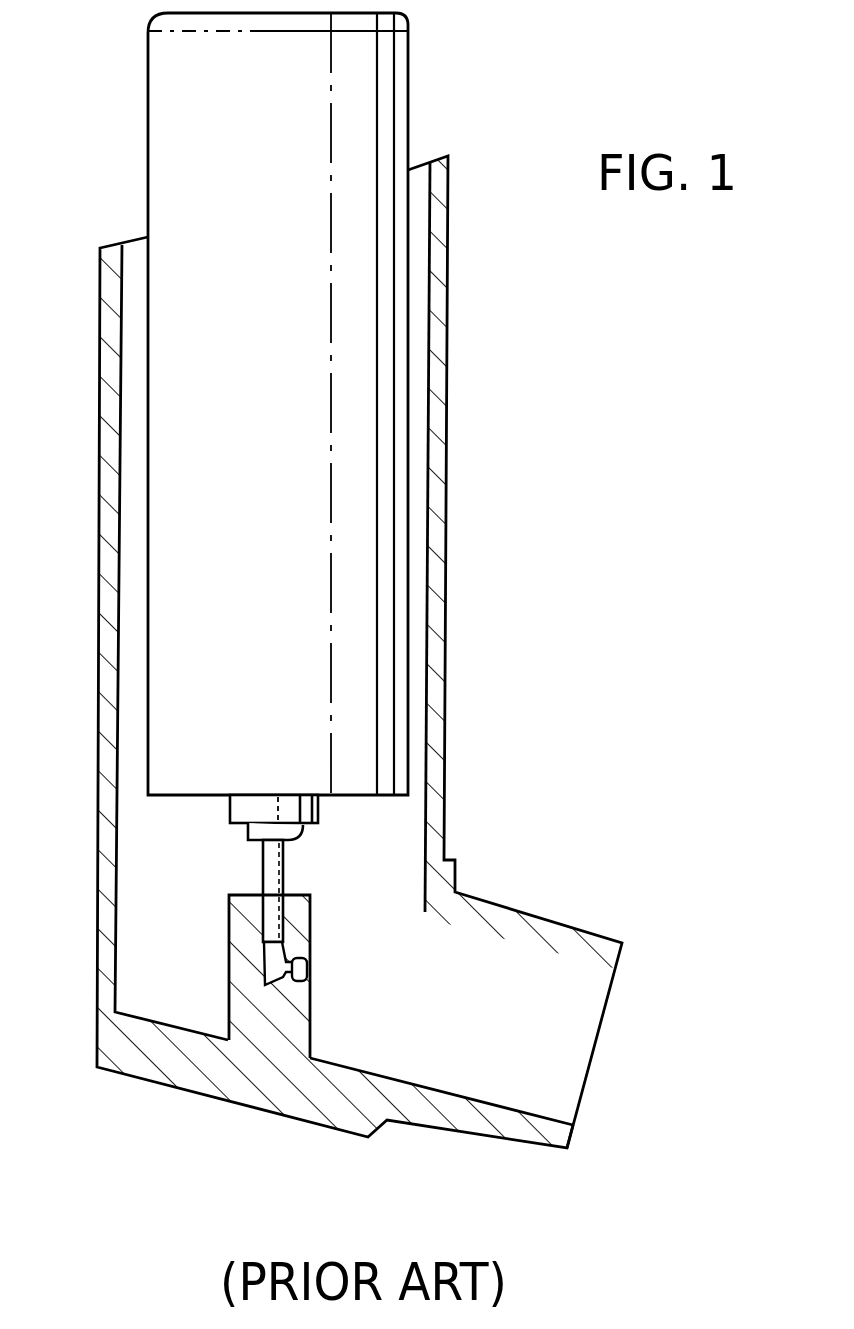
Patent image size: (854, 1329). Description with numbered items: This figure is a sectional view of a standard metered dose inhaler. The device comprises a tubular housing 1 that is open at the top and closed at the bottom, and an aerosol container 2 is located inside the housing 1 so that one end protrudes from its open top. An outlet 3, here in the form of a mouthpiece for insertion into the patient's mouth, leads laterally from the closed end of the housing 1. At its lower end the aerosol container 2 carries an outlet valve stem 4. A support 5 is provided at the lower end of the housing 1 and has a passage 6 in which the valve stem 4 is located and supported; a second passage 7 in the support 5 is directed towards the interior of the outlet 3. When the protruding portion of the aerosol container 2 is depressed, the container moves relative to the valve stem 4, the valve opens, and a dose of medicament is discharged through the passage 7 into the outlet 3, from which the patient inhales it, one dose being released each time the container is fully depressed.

The tubular housing 1 is at (444, 820).
The aerosol container 2 is at (178, 97).
The outlet 3 is at (572, 1060).
The outlet valve stem 4 is at (262, 868).
The support 5 is at (293, 1022).
The passage 6 is at (277, 960).
The second passage 7 is at (302, 977).